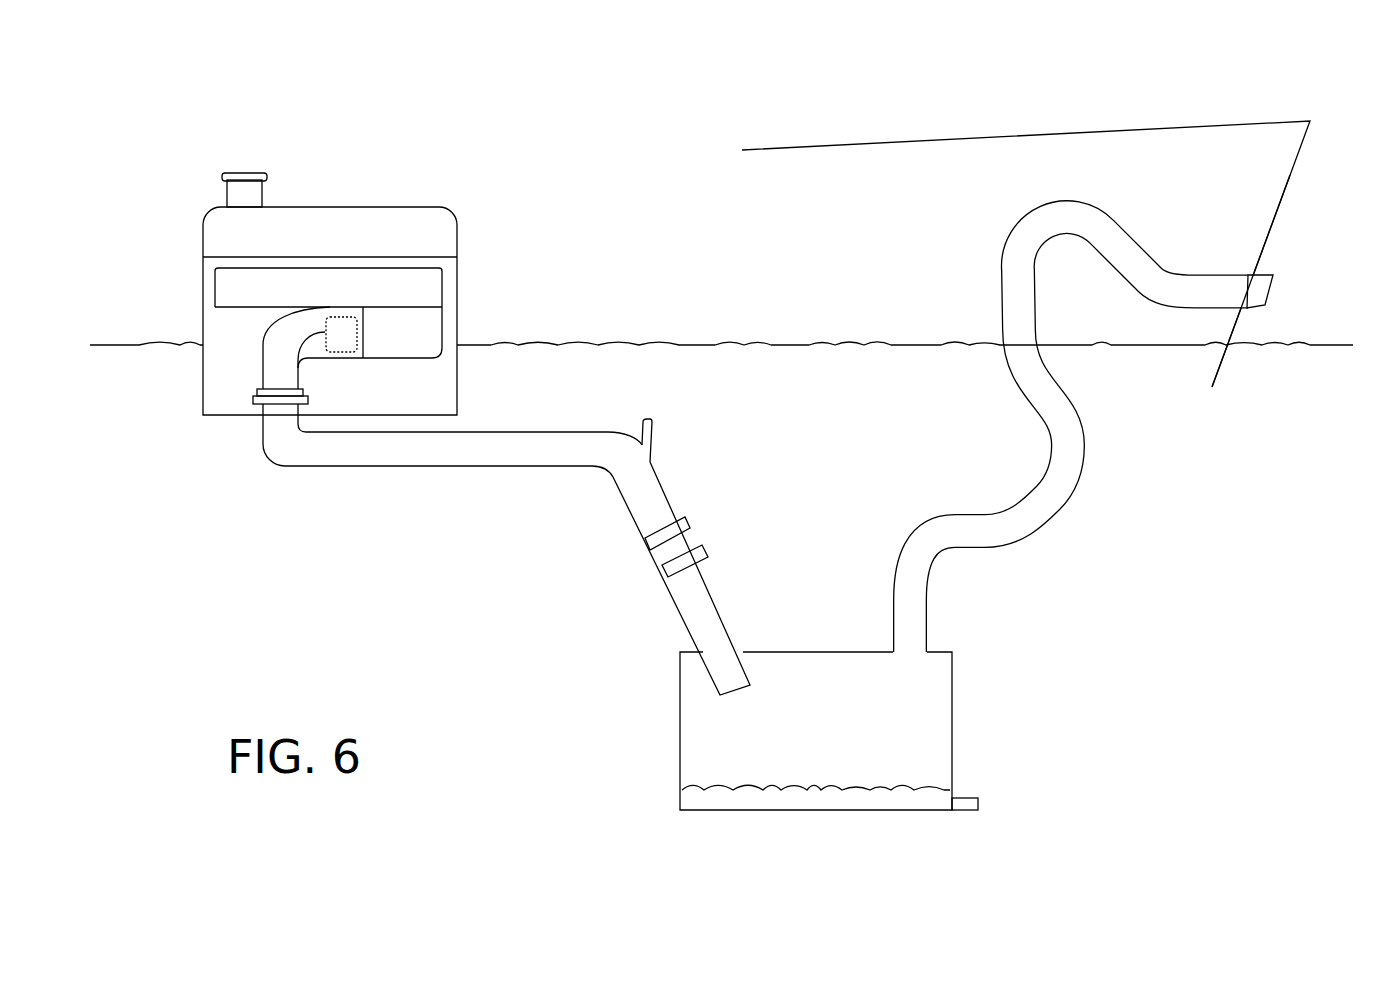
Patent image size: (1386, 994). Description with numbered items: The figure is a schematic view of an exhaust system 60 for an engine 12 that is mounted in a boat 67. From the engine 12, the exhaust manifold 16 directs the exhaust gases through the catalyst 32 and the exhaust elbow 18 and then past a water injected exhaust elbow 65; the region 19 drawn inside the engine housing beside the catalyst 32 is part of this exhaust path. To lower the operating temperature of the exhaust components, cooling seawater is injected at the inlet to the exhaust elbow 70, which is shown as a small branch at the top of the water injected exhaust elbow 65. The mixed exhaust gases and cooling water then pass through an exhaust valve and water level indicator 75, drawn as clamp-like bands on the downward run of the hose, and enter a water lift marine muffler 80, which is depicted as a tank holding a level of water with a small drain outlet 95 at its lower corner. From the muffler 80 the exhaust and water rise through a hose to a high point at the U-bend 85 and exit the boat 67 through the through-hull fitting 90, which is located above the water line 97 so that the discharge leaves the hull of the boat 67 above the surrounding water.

The exhaust system 60 is at (540, 133).
The engine 12 is at (365, 206).
The exhaust manifold 16 is at (445, 282).
The toilet bowl 19 is at (380, 333).
The exhaust elbow 18 is at (262, 343).
The catalyst 32 is at (325, 332).
The water injected exhaust elbow 65 is at (655, 447).
The inlet to the exhaust elbow 70 is at (643, 413).
The exhaust valve and water level indicator 75 is at (660, 560).
The water lift marine muffler 80 is at (952, 716).
The tank outlet 95 is at (978, 803).
The U-bend 85 is at (1088, 200).
The through-hull fitting 90 is at (1270, 295).
The water line 97 is at (1317, 347).
The boat 67 is at (1302, 138).